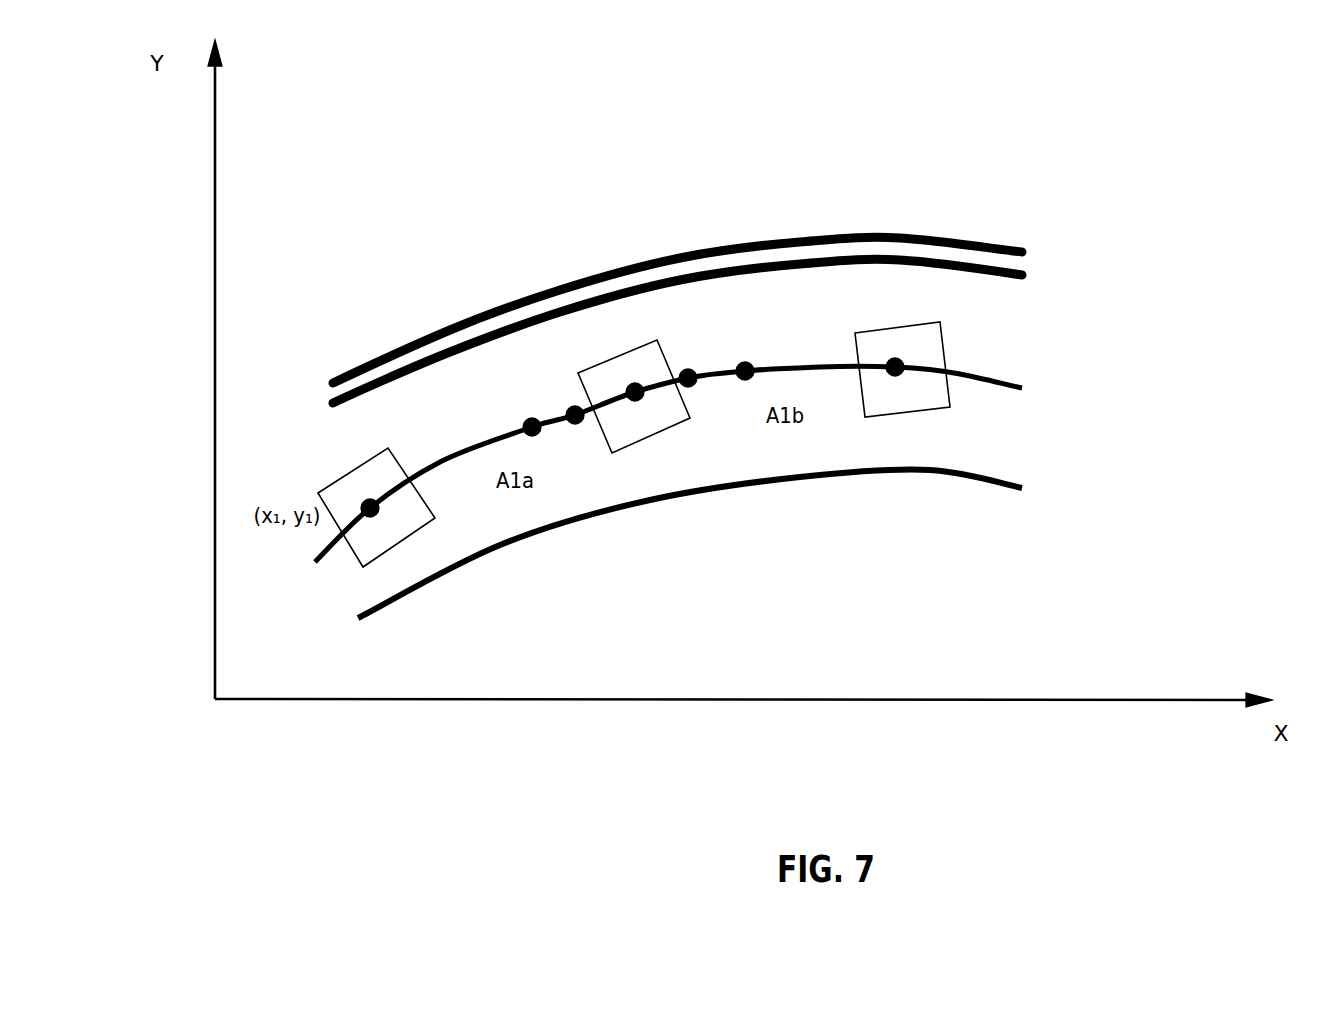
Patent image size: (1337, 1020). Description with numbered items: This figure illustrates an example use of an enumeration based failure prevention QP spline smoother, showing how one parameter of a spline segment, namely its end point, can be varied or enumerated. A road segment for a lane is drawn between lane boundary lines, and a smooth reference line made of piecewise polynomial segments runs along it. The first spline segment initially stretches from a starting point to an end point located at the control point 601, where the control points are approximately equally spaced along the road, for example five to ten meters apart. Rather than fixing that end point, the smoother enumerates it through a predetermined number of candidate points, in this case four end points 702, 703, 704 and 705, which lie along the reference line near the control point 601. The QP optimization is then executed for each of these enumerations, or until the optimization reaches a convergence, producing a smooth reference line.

The control point 601 is at (632, 384).
The enumerated end point 702 is at (523, 424).
The enumerated end point 703 is at (568, 408).
The enumerated end point 704 is at (688, 370).
The enumerated end point 705 is at (750, 363).